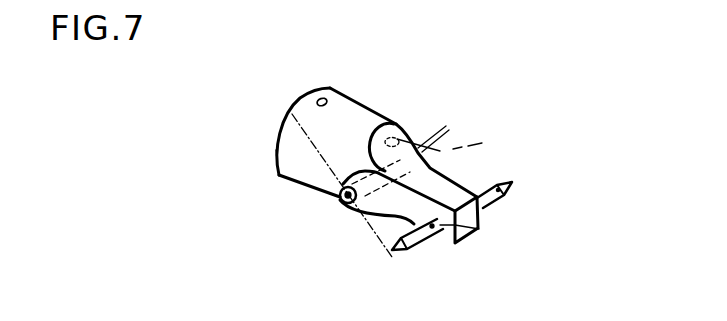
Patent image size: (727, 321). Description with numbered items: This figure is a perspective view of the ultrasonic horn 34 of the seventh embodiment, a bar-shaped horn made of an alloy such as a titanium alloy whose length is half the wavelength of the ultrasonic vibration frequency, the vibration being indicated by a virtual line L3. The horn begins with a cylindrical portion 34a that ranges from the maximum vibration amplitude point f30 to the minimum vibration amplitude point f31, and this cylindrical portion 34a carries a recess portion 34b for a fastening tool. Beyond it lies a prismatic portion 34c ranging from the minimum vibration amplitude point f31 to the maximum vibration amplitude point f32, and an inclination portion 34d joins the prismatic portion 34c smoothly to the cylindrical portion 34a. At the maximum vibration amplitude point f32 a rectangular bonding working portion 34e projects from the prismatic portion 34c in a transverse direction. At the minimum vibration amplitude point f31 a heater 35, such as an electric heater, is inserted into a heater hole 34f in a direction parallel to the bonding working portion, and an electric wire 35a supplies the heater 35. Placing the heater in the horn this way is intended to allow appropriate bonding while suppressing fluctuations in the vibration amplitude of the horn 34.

The ultrasonic horn 34 is at (276, 182).
The cylindrical portion 34a is at (310, 110).
The recess portion 34b is at (326, 100).
The prismatic portion 34c is at (458, 190).
The inclination portion 34d is at (402, 122).
The bonding working portion 34e is at (513, 183).
The heater hole 34f is at (348, 205).
The heater 35 is at (463, 145).
The electric wire 35a is at (432, 140).
The axis line L3 is at (292, 114).
The maximum vibration amplitude point f30 is at (273, 158).
The minimum vibration amplitude point f31 is at (341, 204).
The maximum vibration amplitude point f32 is at (479, 229).